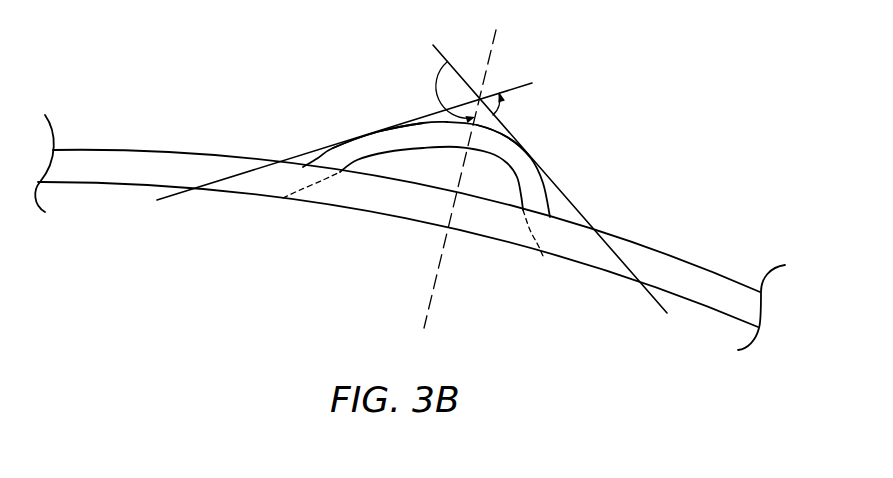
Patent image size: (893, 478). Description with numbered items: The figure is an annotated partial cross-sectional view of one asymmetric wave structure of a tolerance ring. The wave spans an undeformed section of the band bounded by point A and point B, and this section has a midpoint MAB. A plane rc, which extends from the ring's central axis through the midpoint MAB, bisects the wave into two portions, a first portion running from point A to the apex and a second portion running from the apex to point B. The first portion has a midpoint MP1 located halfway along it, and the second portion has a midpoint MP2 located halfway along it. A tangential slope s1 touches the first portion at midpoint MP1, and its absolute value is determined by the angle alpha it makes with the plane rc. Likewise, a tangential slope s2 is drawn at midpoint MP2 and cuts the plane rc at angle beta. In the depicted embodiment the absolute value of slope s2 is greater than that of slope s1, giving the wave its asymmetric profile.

The tangential slope of portion p1 s1 is at (331, 151).
The tangential slope of portion p2 s2 is at (556, 197).
The plane rc is at (468, 179).
The midpoint of portion p1 MP1 is at (377, 133).
The midpoint of portion p2 MP2 is at (522, 148).
The point A is at (283, 199).
The point B is at (543, 257).
The midpoint of section AB MAB is at (458, 286).